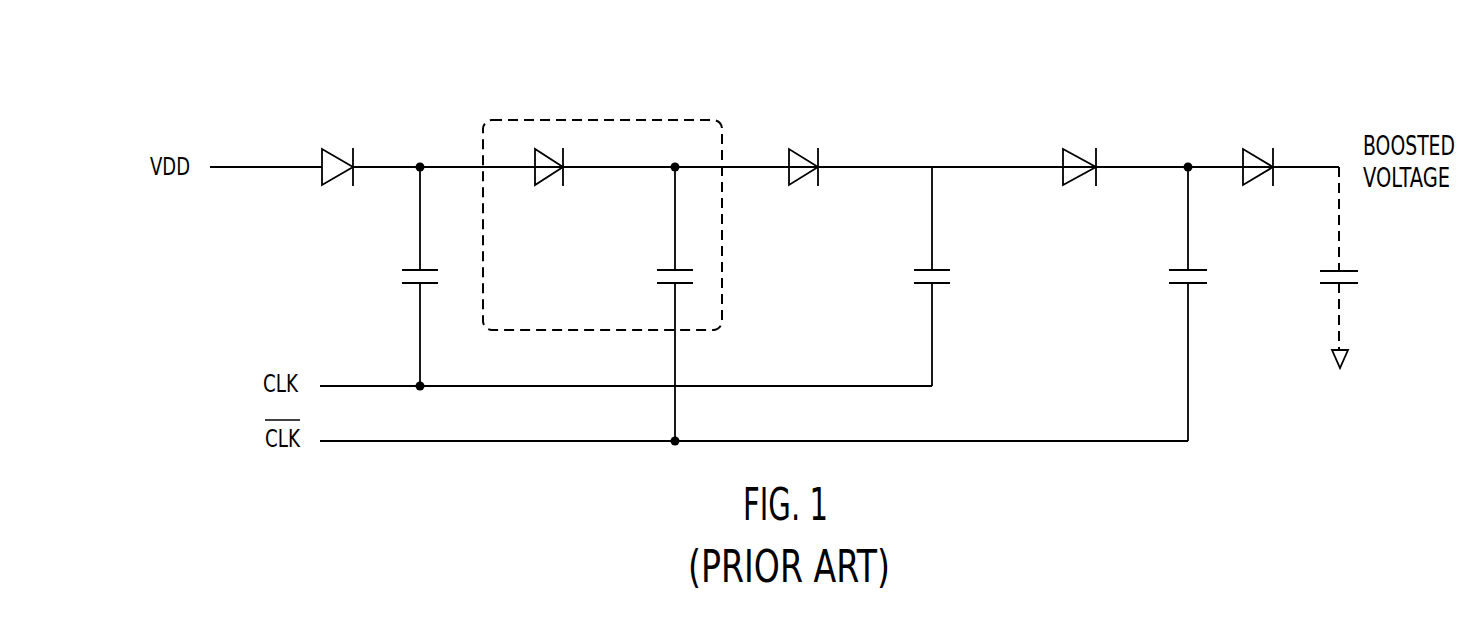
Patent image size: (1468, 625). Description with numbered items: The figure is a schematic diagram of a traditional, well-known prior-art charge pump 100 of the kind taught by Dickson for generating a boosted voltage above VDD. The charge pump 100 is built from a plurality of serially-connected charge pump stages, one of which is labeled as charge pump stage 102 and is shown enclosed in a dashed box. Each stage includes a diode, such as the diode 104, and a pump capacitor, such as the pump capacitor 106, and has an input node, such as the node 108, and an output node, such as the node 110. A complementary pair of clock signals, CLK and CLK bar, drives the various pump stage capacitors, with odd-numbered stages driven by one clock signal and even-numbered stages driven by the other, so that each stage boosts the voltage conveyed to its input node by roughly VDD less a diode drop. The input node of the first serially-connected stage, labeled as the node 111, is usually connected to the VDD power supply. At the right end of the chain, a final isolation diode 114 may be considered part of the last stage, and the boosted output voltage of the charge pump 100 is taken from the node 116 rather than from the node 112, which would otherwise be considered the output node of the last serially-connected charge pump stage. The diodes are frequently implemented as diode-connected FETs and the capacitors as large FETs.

The charge pump 100 is at (969, 45).
The charge pump stage 102 is at (605, 120).
The diode 104 is at (549, 184).
The pump capacitor 106 is at (655, 278).
The input node 108 is at (440, 164).
The output node 110 is at (742, 165).
The input node of first charge pump stage 111 is at (250, 165).
The output node of last charge pump stage 112 is at (1148, 165).
The isolation diode 114 is at (1258, 148).
The output node 116 is at (1300, 165).